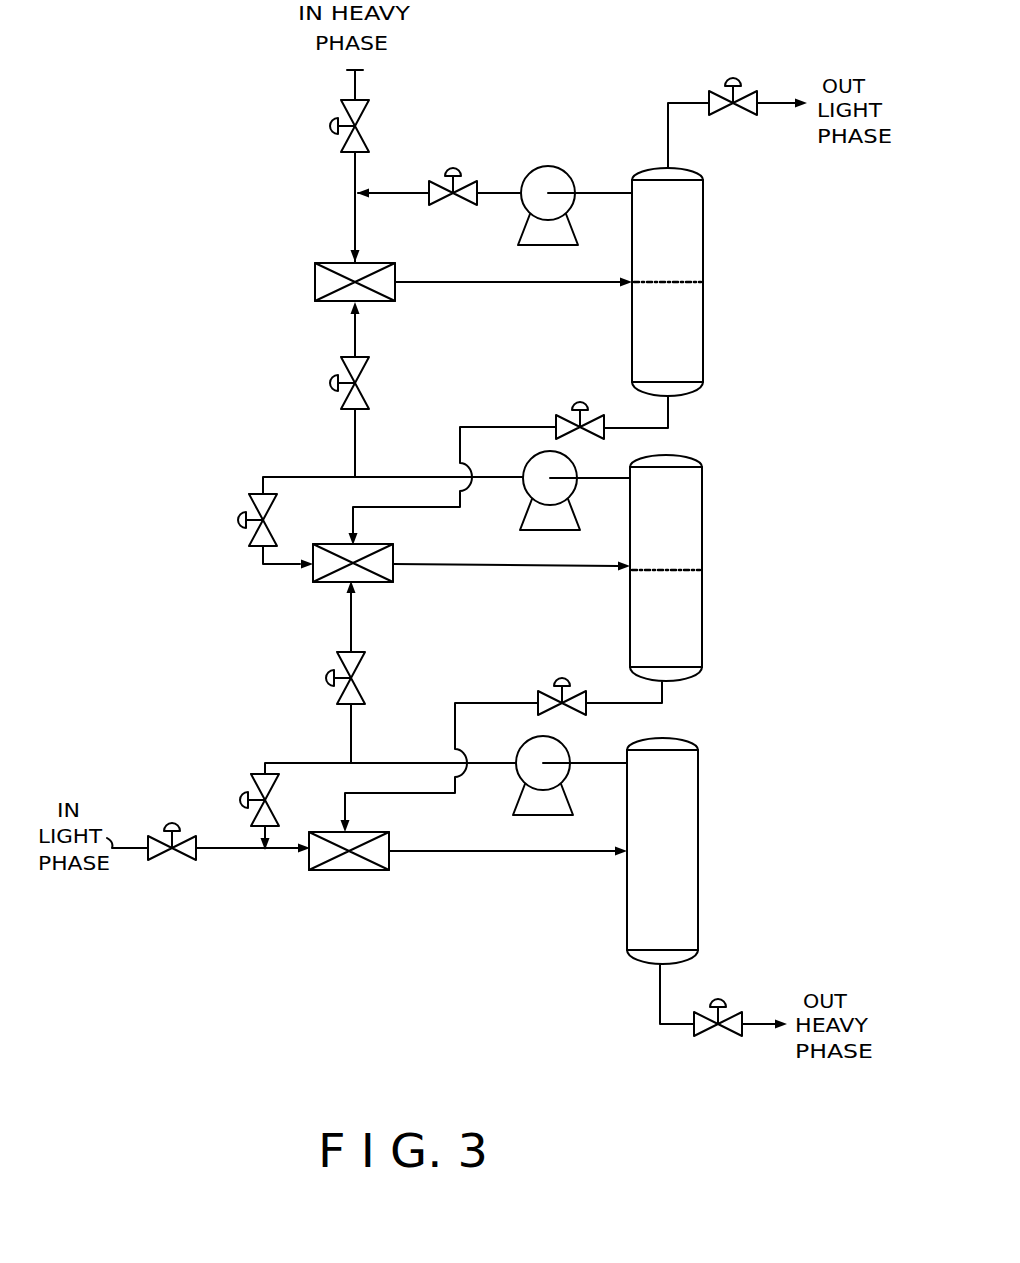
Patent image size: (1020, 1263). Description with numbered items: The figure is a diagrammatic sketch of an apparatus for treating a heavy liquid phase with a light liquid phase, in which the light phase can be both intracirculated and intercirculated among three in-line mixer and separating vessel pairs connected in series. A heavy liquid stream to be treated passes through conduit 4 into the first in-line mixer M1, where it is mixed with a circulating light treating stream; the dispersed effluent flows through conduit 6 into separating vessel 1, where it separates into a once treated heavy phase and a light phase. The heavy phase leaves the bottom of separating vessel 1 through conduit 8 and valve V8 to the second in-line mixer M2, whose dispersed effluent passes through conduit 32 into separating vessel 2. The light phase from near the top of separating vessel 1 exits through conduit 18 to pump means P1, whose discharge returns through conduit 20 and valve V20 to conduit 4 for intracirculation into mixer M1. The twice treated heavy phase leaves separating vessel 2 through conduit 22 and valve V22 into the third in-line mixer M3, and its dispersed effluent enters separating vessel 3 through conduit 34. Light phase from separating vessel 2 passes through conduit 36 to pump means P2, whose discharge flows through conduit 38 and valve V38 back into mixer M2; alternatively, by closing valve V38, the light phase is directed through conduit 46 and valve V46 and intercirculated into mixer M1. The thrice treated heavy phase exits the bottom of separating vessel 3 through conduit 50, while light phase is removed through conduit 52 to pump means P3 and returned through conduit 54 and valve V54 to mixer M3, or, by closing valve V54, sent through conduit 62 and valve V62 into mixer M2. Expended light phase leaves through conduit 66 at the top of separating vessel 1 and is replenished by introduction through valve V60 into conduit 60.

The separating vessel 1 is at (675, 356).
The separating vessel 2 is at (673, 640).
The separating vessel 3 is at (670, 926).
The conduit 4 is at (355, 173).
The conduit 6 is at (462, 280).
The conduit 8 is at (669, 411).
The conduit 18 is at (598, 191).
The conduit 20 is at (503, 191).
The conduit 22 is at (664, 700).
The conduit 32 is at (492, 571).
The conduit 34 is at (550, 856).
The conduit 36 is at (617, 478).
The conduit 38 is at (285, 477).
The conduit 46 is at (357, 436).
The conduit 50 is at (665, 988).
The conduit 52 is at (612, 762).
The conduit 54 is at (330, 760).
The conduit 60 is at (220, 850).
The conduit 62 is at (352, 720).
The conduit 66 is at (669, 137).
The valve V20 is at (447, 174).
The valve V46 is at (364, 390).
The valve V38 is at (236, 522).
The valve V8 is at (592, 406).
The valve V22 is at (552, 683).
The valve V62 is at (358, 653).
The valve V54 is at (238, 812).
The valve V60 is at (183, 863).
The pump means P1 is at (572, 224).
The pump means P2 is at (572, 520).
The pump means P3 is at (568, 805).
The in-line mixer M1 is at (394, 301).
The in-line mixer M2 is at (385, 581).
The in-line mixer M3 is at (372, 876).